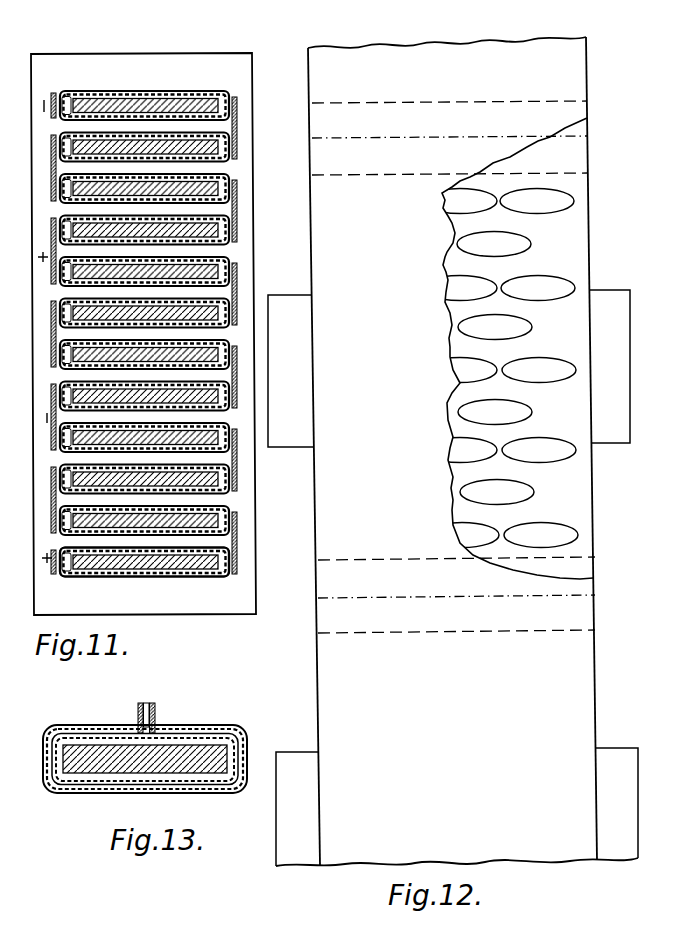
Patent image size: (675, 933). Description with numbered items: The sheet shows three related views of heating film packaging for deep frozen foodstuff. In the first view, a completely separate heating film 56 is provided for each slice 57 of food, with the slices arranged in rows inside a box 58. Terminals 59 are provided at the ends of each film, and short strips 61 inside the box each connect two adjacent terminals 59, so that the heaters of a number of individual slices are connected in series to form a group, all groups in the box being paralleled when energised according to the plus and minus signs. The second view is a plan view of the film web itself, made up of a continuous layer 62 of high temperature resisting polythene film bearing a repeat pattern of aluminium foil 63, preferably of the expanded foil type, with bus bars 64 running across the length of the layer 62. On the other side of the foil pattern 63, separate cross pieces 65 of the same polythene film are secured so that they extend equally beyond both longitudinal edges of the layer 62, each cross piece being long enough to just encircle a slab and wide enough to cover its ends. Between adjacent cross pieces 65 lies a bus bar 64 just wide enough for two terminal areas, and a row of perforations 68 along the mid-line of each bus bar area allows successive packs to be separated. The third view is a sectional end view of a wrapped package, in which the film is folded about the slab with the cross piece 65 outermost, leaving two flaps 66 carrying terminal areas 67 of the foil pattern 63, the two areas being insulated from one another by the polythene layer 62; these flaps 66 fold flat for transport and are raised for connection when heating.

In FIG. 11, the heating film 56 is at (168, 577).
In FIG. 11, the slice 57 is at (157, 187).
In FIG. 11, the box 58 is at (247, 587).
In FIG. 11, the terminals 59 is at (53, 222).
In FIG. 11, the short strips 61 is at (53, 393).
In FIG. 12, the continuous layer 62 is at (460, 753).
In FIG. 13, the continuous layer 62 is at (88, 773).
In FIG. 12, the aluminium foil pattern 63 is at (560, 470).
In FIG. 13, the aluminium foil pattern 63 is at (183, 790).
In FIG. 12, the bus bars 64 is at (584, 618).
In FIG. 12, the cross pieces 65 is at (292, 302).
In FIG. 13, the cross pieces 65 is at (221, 726).
In FIG. 13, the flaps 66 is at (147, 703).
In FIG. 13, the terminal areas 67 is at (138, 709).
In FIG. 12, the perforations 68 is at (320, 138).